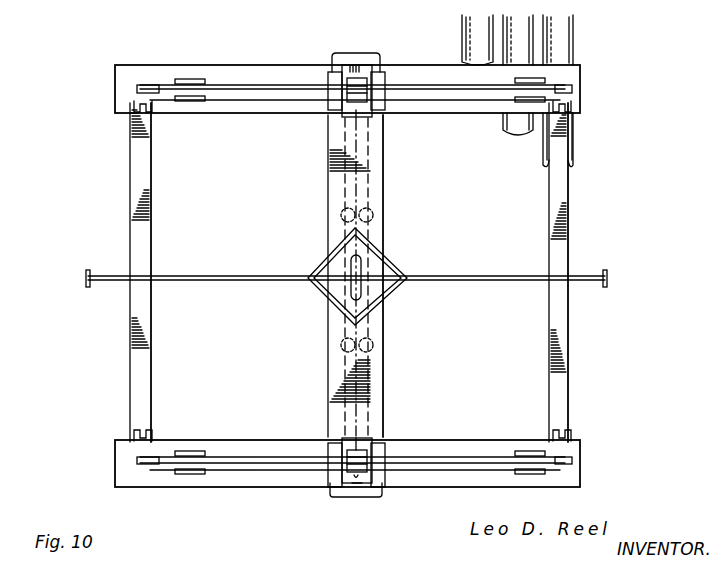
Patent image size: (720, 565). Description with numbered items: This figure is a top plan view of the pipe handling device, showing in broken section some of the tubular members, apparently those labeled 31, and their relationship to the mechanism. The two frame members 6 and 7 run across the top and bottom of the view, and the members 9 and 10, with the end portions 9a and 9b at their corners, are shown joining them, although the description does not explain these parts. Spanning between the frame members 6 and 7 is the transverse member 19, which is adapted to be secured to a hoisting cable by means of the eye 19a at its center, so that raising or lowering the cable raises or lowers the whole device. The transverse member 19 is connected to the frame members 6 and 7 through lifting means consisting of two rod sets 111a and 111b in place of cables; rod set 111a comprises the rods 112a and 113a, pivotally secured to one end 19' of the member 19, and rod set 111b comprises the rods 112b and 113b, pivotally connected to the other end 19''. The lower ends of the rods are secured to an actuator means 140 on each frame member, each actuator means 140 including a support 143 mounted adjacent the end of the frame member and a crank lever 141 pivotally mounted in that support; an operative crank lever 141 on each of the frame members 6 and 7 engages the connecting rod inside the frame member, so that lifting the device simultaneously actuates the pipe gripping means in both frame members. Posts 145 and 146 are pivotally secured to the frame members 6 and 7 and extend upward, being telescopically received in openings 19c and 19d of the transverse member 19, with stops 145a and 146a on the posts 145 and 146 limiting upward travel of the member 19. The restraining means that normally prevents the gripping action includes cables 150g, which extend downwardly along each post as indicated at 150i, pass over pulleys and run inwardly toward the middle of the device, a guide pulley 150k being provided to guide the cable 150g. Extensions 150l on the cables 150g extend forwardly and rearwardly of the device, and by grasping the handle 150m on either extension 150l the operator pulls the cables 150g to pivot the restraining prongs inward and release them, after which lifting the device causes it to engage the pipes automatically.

The frame member 6 is at (582, 76).
The frame member 7 is at (582, 479).
The left side frame member 9 is at (143, 247).
The left end bracket 9a is at (132, 108).
The right end bracket 9b is at (573, 108).
The right side frame member 10 is at (556, 255).
The transverse member 19 is at (375, 276).
The end of transverse member 19' is at (401, 56).
The end of transverse member 19'' is at (395, 529).
The eye 19a is at (360, 280).
The opening 19c is at (368, 64).
The opening 19d is at (348, 487).
The pipes 31 is at (573, 35).
The rod set 111a is at (243, 80).
The rod set 111b is at (262, 455).
The rod 112a is at (262, 92).
The rod 112b is at (250, 487).
The rod 113a is at (452, 64).
The rod 113b is at (435, 465).
The actuator means 140 is at (181, 78).
The crank lever 141 is at (150, 98).
The support 143 is at (190, 79).
The post 145 is at (345, 70).
The stop 145a is at (332, 106).
The post 146 is at (343, 450).
The stop 146a is at (383, 443).
The cable 150g is at (378, 385).
The cable portion along post 150i is at (356, 487).
The guide pulley 150k is at (374, 345).
The cable extension 150l is at (200, 276).
The handle 150m is at (87, 280).